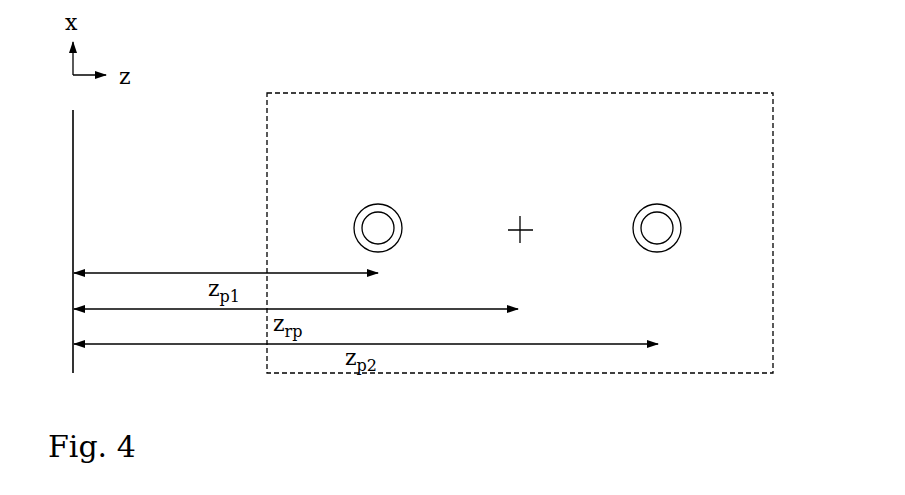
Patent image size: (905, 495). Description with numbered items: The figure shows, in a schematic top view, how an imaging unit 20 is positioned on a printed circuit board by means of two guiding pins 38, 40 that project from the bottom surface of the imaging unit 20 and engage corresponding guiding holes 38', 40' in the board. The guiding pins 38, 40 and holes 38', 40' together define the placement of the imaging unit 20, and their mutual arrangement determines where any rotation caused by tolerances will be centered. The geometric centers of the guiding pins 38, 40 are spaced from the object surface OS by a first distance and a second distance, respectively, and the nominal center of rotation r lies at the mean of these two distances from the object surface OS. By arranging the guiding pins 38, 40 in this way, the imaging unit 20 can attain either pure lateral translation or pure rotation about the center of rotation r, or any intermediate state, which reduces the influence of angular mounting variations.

The imaging unit 20 is at (378, 92).
The guiding pin 38 is at (408, 216).
The guiding hole 38' is at (396, 203).
The guiding pin 40 is at (687, 216).
The guiding hole 40' is at (675, 203).
The nominal center of rotation r is at (527, 225).
The object surface OS is at (74, 145).